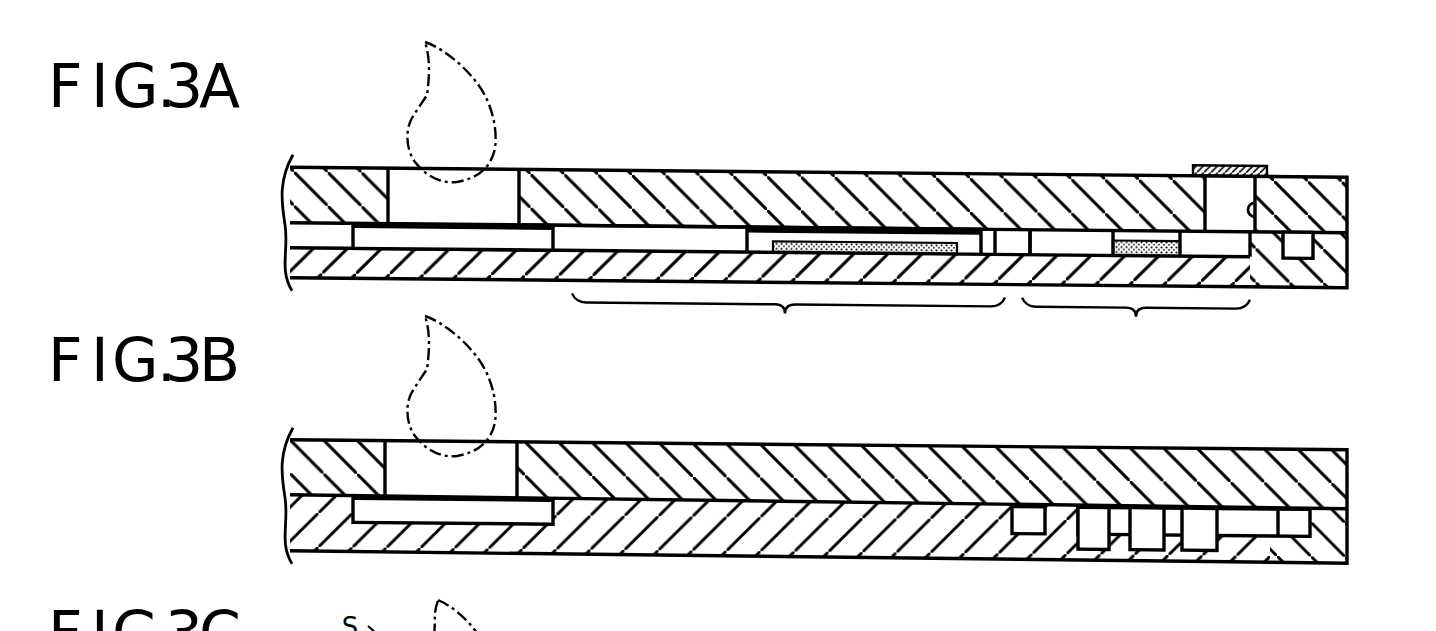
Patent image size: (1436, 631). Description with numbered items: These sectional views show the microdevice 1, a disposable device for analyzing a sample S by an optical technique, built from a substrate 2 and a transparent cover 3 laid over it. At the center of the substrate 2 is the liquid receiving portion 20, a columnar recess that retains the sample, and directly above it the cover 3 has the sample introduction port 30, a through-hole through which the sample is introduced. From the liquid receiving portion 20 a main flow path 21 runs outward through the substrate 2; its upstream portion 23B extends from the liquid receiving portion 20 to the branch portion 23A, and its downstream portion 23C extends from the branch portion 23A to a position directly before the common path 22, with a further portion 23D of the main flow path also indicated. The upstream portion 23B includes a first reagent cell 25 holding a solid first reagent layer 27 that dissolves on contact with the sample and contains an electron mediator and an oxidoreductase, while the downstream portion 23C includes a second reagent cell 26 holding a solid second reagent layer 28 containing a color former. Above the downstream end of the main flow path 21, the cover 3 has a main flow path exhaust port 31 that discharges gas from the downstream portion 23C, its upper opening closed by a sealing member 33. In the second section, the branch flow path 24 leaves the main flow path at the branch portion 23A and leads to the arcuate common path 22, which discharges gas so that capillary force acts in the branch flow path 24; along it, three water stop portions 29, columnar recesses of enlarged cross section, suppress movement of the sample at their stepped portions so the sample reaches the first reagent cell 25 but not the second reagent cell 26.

In FIG. 3A, the microdevice 1 is at (1097, 133).
In FIG. 3B, the microdevice 1 is at (1103, 430).
In FIG. 3A, the substrate 2 is at (1300, 290).
In FIG. 3B, the substrate 2 is at (1300, 565).
In FIG. 3A, the cover 3 is at (1313, 175).
In FIG. 3B, the cover 3 is at (1313, 448).
In FIG. 3A, the liquid receiving portion 20 is at (555, 246).
In FIG. 3B, the liquid receiving portion 20 is at (555, 523).
In FIG. 3A, the main flow path 21 is at (1072, 246).
In FIG. 3A, the common path 22 is at (1303, 243).
In FIG. 3B, the common path 22 is at (1303, 521).
In FIG. 3A, the branch portion 23A is at (1010, 240).
In FIG. 3A, the upstream portion 23B is at (788, 321).
In FIG. 3A, the downstream portion 23C is at (1136, 325).
In FIG. 3A, the fourth portion 23D is at (658, 232).
In FIG. 3B, the branch flow path 24 is at (1243, 522).
In FIG. 3A, the first reagent cell 25 is at (750, 233).
In FIG. 3A, the second reagent cell 26 is at (1170, 237).
In FIG. 3A, the first reagent layer 27 is at (843, 240).
In FIG. 3A, the second reagent layer 28 is at (1145, 245).
In FIG. 3B, the water stop portion 29 is at (1142, 535).
In FIG. 3A, the sample introduction port 30 is at (518, 180).
In FIG. 3B, the sample introduction port 30 is at (518, 454).
In FIG. 3A, the main flow path exhaust port 31 is at (1255, 208).
In FIG. 3A, the sealing member 33 is at (1232, 165).
In FIG. 3A, the flame / heat source S is at (403, 138).
In FIG. 3B, the flame / heat source S is at (406, 412).